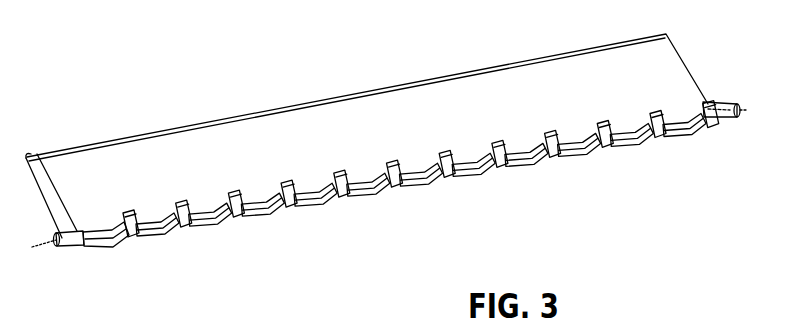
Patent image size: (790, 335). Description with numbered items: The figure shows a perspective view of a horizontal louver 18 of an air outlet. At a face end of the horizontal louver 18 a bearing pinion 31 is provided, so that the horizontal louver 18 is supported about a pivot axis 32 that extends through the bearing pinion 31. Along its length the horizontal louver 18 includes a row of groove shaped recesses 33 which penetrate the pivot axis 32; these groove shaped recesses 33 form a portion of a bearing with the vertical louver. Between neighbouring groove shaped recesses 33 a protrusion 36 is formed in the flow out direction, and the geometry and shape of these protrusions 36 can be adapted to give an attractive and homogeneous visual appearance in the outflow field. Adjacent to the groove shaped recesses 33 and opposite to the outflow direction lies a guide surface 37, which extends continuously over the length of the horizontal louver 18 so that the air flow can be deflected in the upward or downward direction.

The horizontal louver 18 is at (291, 89).
The bearing pinion 31 is at (75, 248).
The pivot axis 32 is at (33, 250).
The groove shaped recess 33 is at (133, 254).
The protrusion 36 is at (280, 228).
The guide surface 37 is at (145, 167).